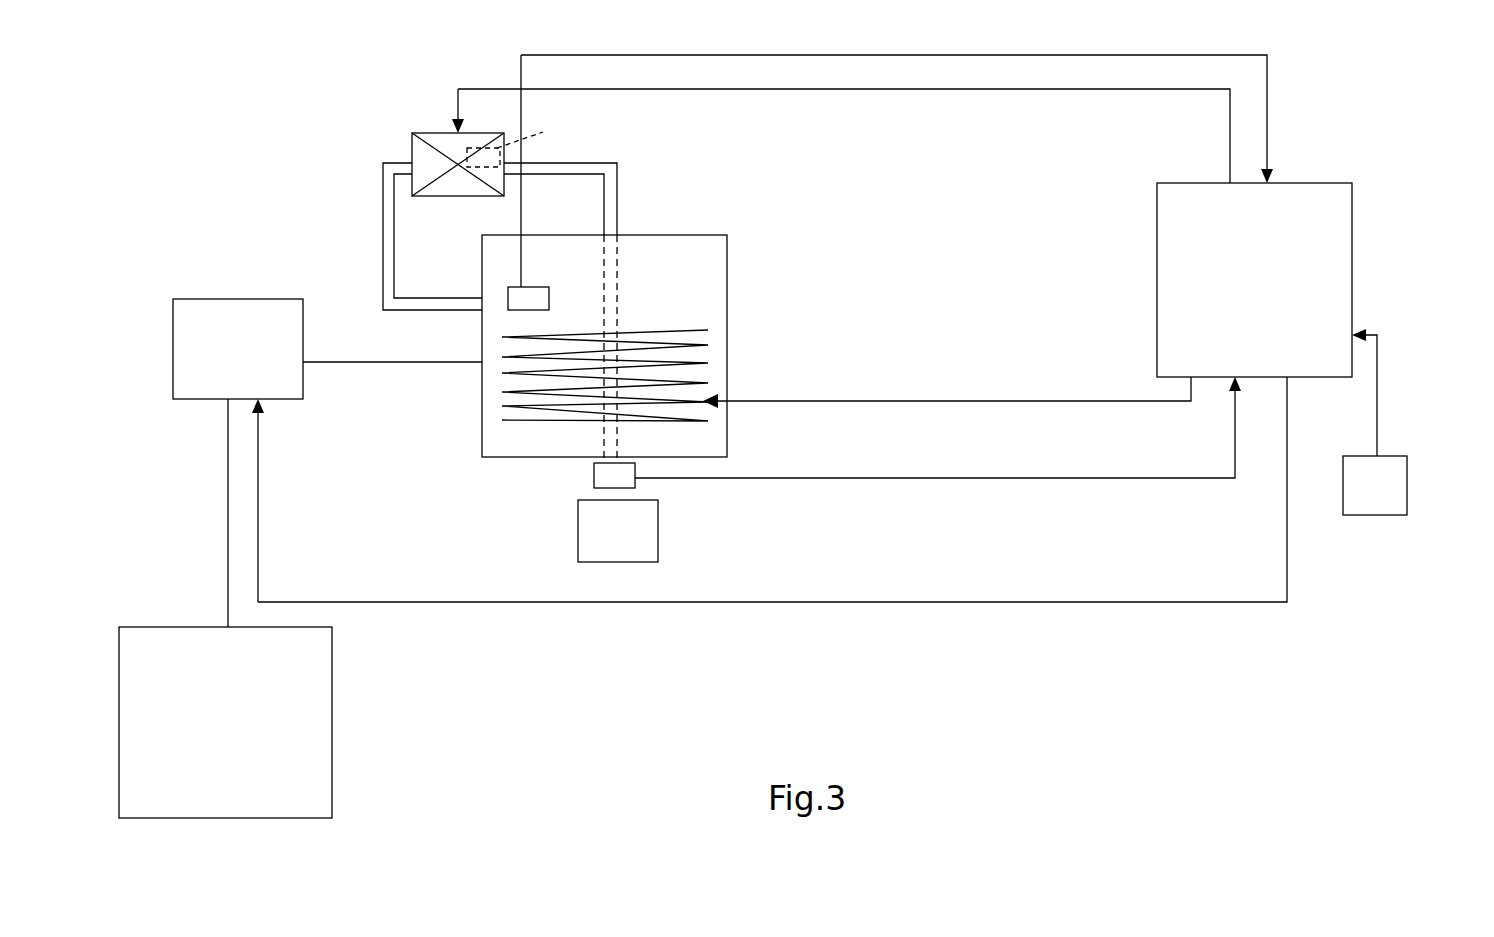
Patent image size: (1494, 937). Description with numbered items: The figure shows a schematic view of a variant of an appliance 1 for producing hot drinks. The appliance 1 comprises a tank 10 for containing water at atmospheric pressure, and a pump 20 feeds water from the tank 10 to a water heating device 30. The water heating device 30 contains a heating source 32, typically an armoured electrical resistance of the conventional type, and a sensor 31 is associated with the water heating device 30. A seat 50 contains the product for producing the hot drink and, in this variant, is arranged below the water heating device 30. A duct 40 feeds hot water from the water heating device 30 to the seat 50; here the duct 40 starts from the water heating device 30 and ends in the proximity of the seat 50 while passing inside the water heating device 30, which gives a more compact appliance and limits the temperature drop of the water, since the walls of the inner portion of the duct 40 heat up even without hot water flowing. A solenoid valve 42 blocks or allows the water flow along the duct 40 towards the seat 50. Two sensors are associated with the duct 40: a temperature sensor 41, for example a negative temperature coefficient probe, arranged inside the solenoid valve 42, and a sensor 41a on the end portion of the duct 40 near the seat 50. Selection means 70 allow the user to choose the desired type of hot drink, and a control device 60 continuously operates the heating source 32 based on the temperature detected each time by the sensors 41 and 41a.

The appliance 1 is at (1165, 731).
The tank 10 is at (285, 720).
The pump 20 is at (327, 441).
The water heating device 30 is at (660, 345).
The sensor 31 is at (518, 298).
The heating source 32 is at (846, 365).
The duct 40 is at (382, 220).
The temperature sensor 41 is at (560, 294).
The sensor 41a is at (595, 472).
The solenoid valve 42 is at (412, 150).
The seat 50 is at (674, 534).
The control device 60 is at (837, 328).
The selection means 70 is at (1398, 450).